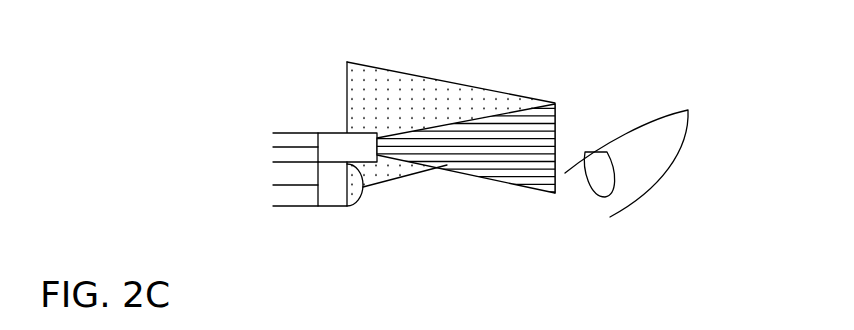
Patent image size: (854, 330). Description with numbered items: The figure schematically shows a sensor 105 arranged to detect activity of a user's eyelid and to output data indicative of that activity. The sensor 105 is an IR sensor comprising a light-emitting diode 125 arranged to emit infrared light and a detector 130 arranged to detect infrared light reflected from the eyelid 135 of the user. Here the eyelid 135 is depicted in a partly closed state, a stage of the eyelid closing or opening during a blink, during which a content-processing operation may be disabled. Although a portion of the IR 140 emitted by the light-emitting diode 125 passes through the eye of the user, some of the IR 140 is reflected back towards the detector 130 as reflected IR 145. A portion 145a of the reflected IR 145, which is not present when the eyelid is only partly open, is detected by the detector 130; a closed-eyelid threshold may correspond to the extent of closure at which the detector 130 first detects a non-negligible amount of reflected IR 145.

The sensor 105 is at (246, 130).
The light-emitting diode 125 is at (334, 108).
The detector 130 is at (327, 225).
The eyelid 135 is at (626, 137).
The IR 140 is at (465, 184).
The reflected IR 145 is at (451, 107).
The portion of the reflected IR 145a is at (399, 225).